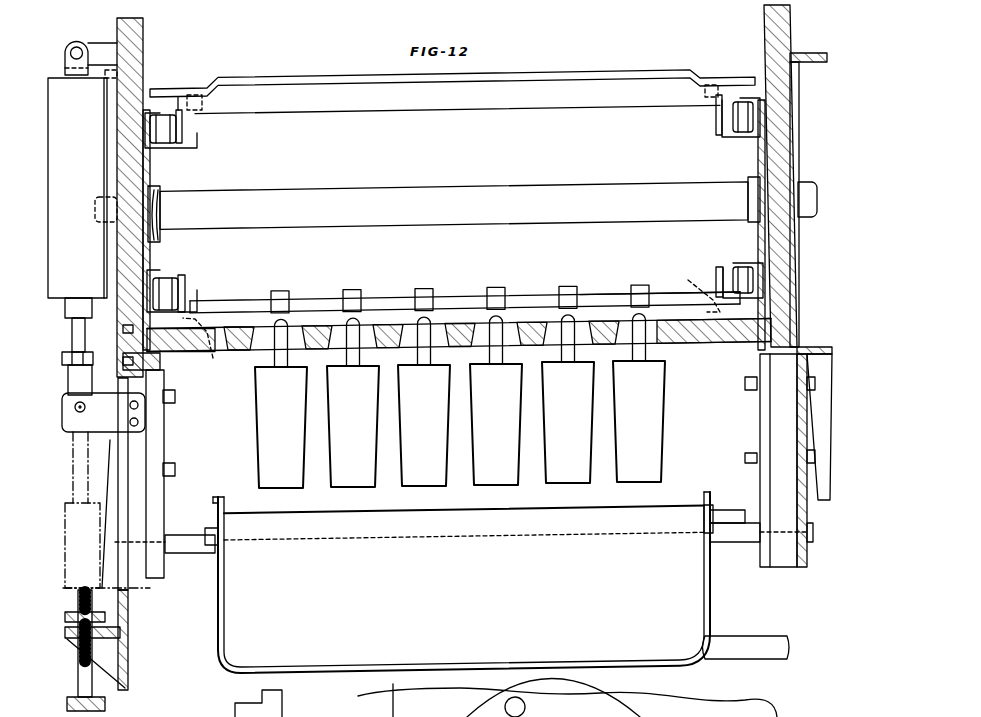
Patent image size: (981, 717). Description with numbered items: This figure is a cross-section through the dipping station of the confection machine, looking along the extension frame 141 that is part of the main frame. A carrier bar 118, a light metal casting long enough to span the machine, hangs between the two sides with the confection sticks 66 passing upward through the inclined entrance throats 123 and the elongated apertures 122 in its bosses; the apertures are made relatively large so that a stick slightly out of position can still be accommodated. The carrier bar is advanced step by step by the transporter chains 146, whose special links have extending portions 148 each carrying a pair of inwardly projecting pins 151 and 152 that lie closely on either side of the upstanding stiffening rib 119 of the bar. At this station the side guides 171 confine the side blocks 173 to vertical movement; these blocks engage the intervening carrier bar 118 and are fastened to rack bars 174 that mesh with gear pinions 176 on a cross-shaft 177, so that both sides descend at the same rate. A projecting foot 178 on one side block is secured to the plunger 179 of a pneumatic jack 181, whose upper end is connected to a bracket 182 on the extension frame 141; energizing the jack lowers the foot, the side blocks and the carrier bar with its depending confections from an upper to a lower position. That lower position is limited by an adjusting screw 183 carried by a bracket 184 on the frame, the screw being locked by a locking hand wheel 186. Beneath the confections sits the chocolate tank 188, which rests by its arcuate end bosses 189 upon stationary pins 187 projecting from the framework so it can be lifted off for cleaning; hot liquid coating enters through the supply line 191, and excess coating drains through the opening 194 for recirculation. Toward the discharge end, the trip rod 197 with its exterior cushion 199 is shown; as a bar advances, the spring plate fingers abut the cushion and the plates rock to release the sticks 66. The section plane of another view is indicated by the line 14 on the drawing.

The section line 14 is at (415, 684).
The stick 66 is at (347, 357).
The carrier bar 118 is at (600, 72).
The stiffening rib 119 is at (593, 310).
The aperture 122 is at (513, 316).
The entrance throat 123 is at (476, 338).
The extension frame 141 is at (116, 117).
The chain 146 is at (181, 130).
The extending portion 148 is at (178, 97).
The pin 151 is at (451, 322).
The pin 152 is at (201, 95).
The side guide 171 is at (148, 497).
The side block 173 is at (160, 353).
The rack bar 174 is at (138, 63).
The gear pinion 176 is at (150, 176).
The cross-shaft 177 is at (320, 190).
The projecting foot 178 is at (136, 427).
The plunger 179 is at (83, 336).
The pneumatic jack 181 is at (86, 173).
The bracket 182 is at (103, 27).
The adjusting screw 183 is at (90, 667).
The bracket 184 is at (111, 641).
The locking hand wheel 186 is at (104, 613).
The stationary pin 187 is at (190, 535).
The chocolate tank 188 is at (709, 612).
The arcuate boss 189 is at (209, 527).
The supply line 191 is at (787, 618).
The opening 194 is at (747, 515).
The trip rod 197 is at (255, 298).
The cushion 199 is at (363, 294).